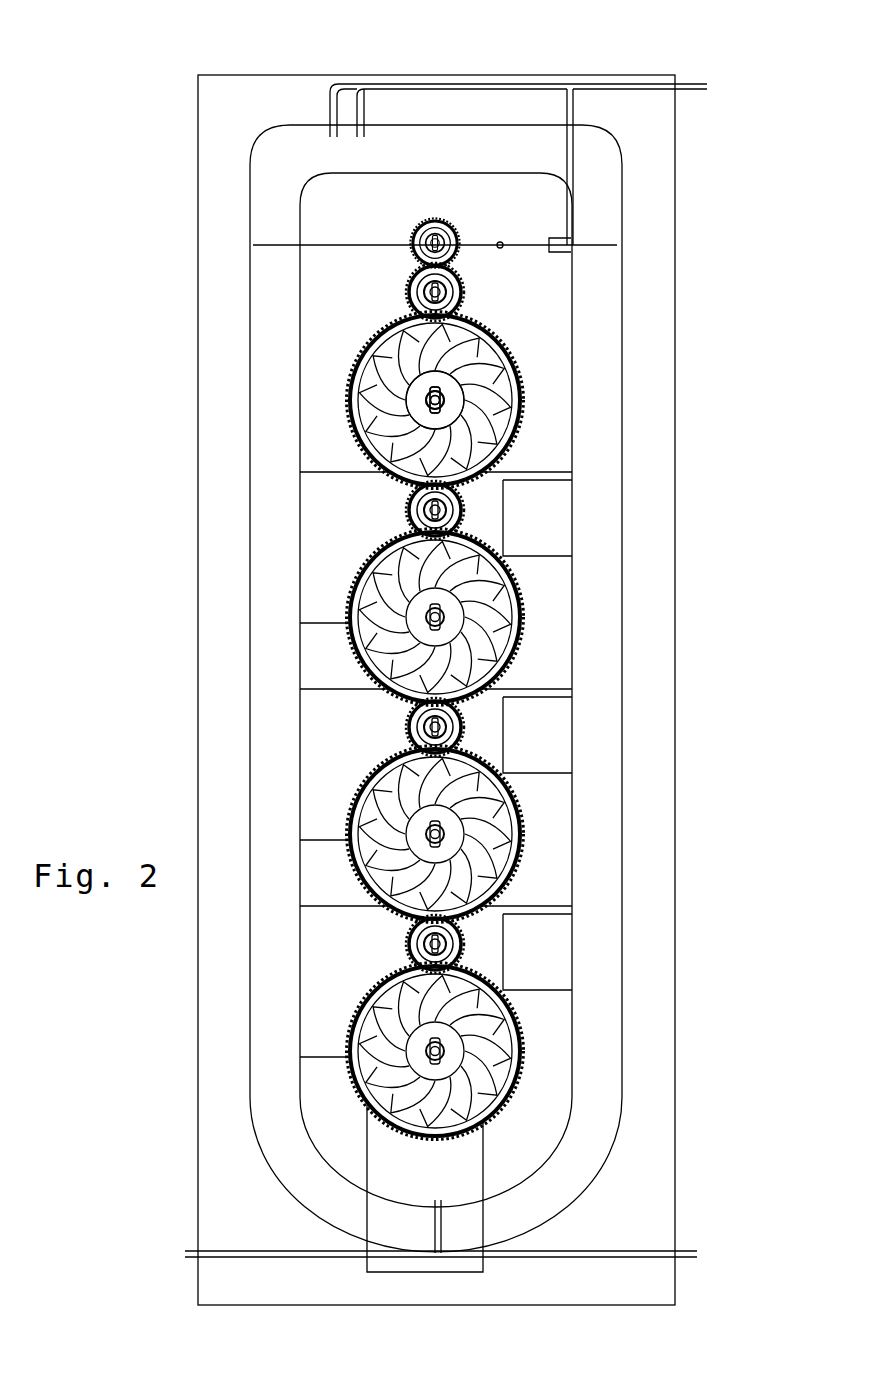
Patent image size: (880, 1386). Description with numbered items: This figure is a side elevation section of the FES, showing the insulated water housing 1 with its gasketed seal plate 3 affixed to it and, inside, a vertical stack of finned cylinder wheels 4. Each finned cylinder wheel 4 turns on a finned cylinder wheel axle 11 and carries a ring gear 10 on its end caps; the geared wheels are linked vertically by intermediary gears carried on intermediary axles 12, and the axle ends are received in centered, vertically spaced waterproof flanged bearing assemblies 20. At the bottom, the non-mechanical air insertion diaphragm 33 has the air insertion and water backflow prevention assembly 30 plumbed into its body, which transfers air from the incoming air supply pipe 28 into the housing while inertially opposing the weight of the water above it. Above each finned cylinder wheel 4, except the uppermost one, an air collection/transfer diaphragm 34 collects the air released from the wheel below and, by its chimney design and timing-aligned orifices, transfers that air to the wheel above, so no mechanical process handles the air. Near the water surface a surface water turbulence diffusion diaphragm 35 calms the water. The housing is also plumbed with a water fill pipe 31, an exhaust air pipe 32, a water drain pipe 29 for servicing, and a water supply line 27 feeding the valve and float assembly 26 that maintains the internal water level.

The insulated water housing 1 is at (230, 105).
The gasketed seal plate 3 is at (298, 173).
The finned cylinder wheel 4 is at (347, 391).
The ring gear 10 is at (350, 648).
The finned cylinder wheel axle 11 is at (435, 400).
The intermediary axle 12 is at (405, 508).
The flanged bearing assembly 20 is at (462, 252).
The valve and float assembly 26 is at (565, 235).
The water supply line 27 is at (572, 163).
The air supply pipe 28 is at (697, 1254).
The water drain pipe 29 is at (185, 1251).
The air insertion and water backflow prevention assembly 30 is at (441, 1197).
The water fill pipe 31 is at (334, 84).
The exhaust air pipe 32 is at (367, 100).
The air insertion diaphragm 33 is at (398, 1165).
The air collection/transfer diaphragm 34 is at (528, 495).
The surface water turbulence diffusion diaphragm 35 is at (410, 247).